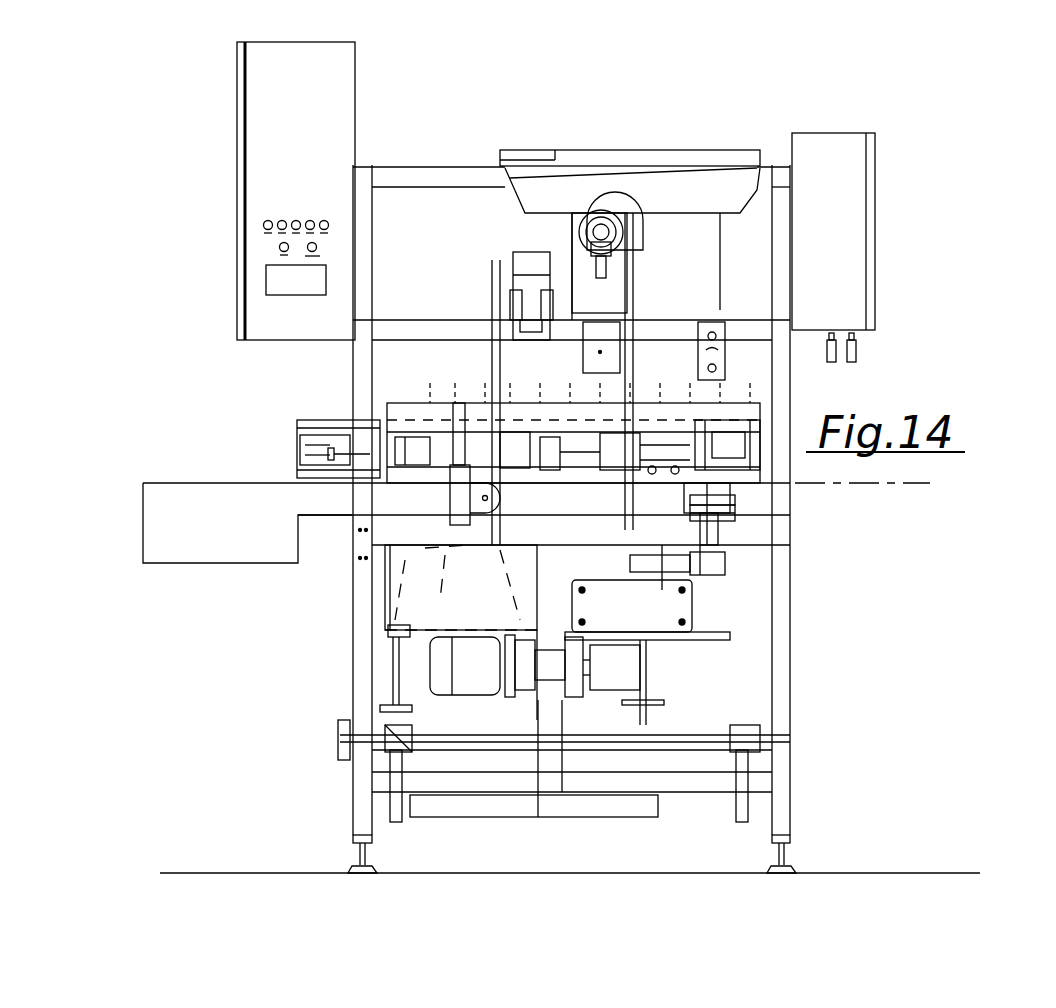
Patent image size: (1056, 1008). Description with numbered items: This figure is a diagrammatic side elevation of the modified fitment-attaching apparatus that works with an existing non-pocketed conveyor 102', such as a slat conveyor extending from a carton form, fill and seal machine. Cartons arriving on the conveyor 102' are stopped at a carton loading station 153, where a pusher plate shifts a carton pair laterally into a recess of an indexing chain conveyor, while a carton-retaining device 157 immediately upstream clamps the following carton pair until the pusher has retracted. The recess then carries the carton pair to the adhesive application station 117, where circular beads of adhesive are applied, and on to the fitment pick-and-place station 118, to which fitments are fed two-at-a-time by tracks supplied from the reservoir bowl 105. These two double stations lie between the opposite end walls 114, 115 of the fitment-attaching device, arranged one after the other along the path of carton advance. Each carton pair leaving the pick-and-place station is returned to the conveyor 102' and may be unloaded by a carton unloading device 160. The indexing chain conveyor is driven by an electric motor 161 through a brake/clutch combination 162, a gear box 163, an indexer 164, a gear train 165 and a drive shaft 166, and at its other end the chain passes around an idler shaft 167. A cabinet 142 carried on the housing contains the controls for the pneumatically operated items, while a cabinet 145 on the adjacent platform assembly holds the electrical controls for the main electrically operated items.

The reservoir bowl 105 is at (528, 200).
The fitment pick-and-place station 118 is at (525, 372).
The adhesive application station 117 is at (606, 358).
The end wall 114 is at (627, 365).
The end wall 115 is at (497, 362).
The carton unloading device 160 is at (339, 437).
The carton-retaining device 157 is at (745, 437).
The cabinet 145 is at (258, 330).
The cabinet 142 is at (850, 230).
The carton loading station 153 is at (668, 476).
The drive shaft 166 is at (738, 517).
The gear train 165 is at (718, 563).
The indexer 164 is at (662, 608).
The gear box 163 is at (617, 670).
The brake/clutch combination 162 is at (548, 680).
The electric motor 161 is at (490, 690).
The idler shaft 167 is at (470, 535).
The conveyor 102' is at (910, 506).